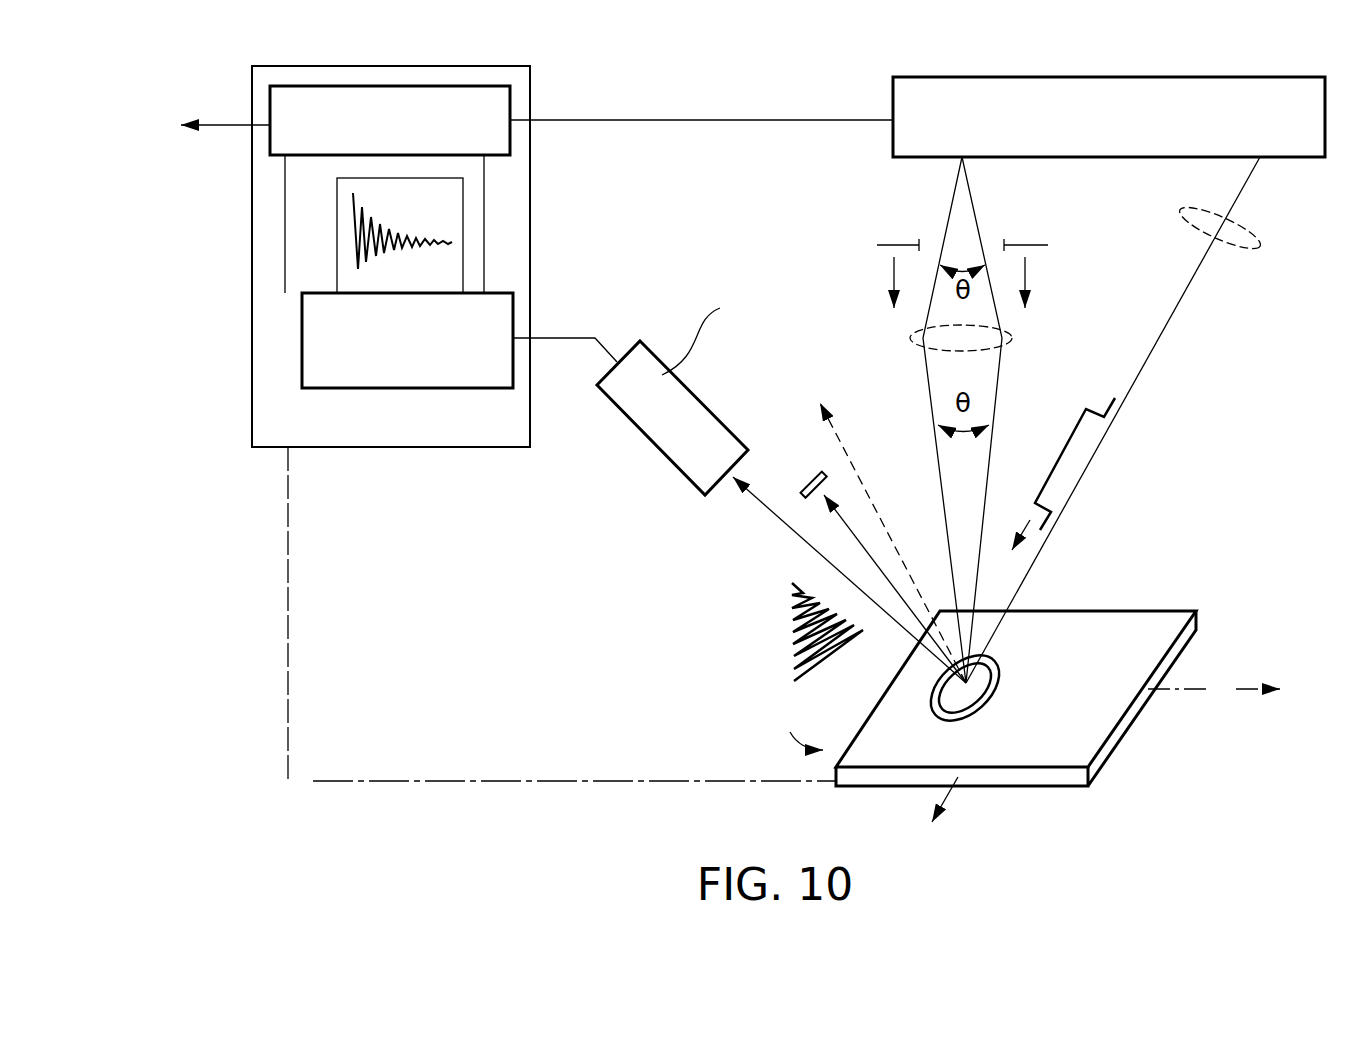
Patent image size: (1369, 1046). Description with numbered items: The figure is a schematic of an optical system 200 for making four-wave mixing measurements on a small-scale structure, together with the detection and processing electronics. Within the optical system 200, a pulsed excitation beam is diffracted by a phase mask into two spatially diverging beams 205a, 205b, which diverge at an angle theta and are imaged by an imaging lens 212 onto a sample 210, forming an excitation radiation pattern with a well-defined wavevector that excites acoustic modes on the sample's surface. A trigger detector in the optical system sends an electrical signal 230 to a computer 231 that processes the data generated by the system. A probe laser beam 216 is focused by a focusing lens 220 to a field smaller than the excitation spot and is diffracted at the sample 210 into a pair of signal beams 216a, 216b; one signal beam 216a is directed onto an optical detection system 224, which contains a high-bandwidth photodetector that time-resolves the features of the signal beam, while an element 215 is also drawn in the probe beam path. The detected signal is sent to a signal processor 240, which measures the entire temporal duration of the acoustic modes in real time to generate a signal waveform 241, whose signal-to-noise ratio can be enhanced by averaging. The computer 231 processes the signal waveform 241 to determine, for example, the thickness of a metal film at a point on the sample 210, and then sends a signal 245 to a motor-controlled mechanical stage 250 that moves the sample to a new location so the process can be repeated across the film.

The optical system 200 is at (893, 95).
The spatially diverging beam 205a is at (1048, 245).
The spatially diverging beam 205b is at (877, 245).
The sample 210 is at (957, 697).
The imaging lens 212 is at (1010, 337).
The reflected probe beam / mirror 215 is at (847, 517).
The laser beam 216 is at (1137, 383).
The signal beam 216a is at (762, 522).
The signal beam 216b is at (862, 492).
The focusing lens 220 is at (1248, 252).
The optical detection system 224 is at (668, 450).
The electrical signal 230 is at (712, 120).
The computer 231 is at (495, 107).
The signal processor 240 is at (407, 382).
The signal waveform 241 is at (384, 232).
The signal 245 is at (290, 570).
The motor-controlled mechanical stage 250 is at (1120, 620).